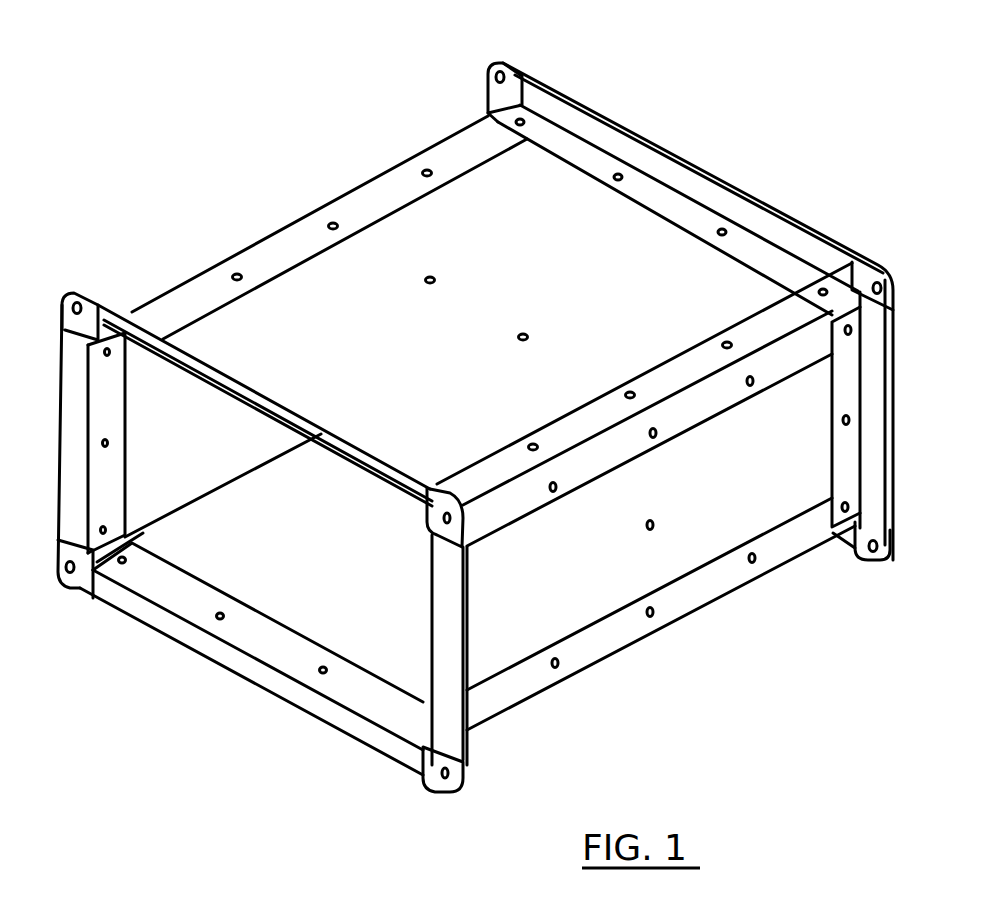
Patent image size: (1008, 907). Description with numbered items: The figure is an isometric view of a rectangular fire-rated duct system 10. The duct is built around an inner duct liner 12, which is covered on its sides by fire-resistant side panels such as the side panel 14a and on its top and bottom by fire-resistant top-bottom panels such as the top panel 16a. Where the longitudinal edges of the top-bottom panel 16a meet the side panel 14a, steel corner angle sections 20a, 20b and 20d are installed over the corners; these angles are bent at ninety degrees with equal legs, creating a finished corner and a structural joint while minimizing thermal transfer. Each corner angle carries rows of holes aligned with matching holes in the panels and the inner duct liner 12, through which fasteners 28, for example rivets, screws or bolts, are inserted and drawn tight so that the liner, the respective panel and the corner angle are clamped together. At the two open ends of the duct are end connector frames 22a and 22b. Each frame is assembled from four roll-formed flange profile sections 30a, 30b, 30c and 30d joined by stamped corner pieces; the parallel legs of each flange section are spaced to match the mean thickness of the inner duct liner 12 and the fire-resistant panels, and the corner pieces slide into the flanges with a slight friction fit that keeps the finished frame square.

The fire-rated duct system 10 is at (722, 84).
The inner duct liner 12 is at (330, 578).
The fire-resistant side panel 14a is at (586, 578).
The fire-resistant top-bottom panel 16a is at (538, 230).
The corner angle section 20a is at (690, 405).
The corner angle section 20b is at (693, 598).
The corner angle section 20d is at (362, 205).
The end connector frame 22a is at (172, 628).
The end connector frame 22b is at (816, 240).
The fastener 28 is at (756, 562).
The flange profile section 30a is at (700, 222).
The flange profile section 30b is at (840, 452).
The flange profile section 30c is at (310, 652).
The flange profile section 30d is at (110, 420).